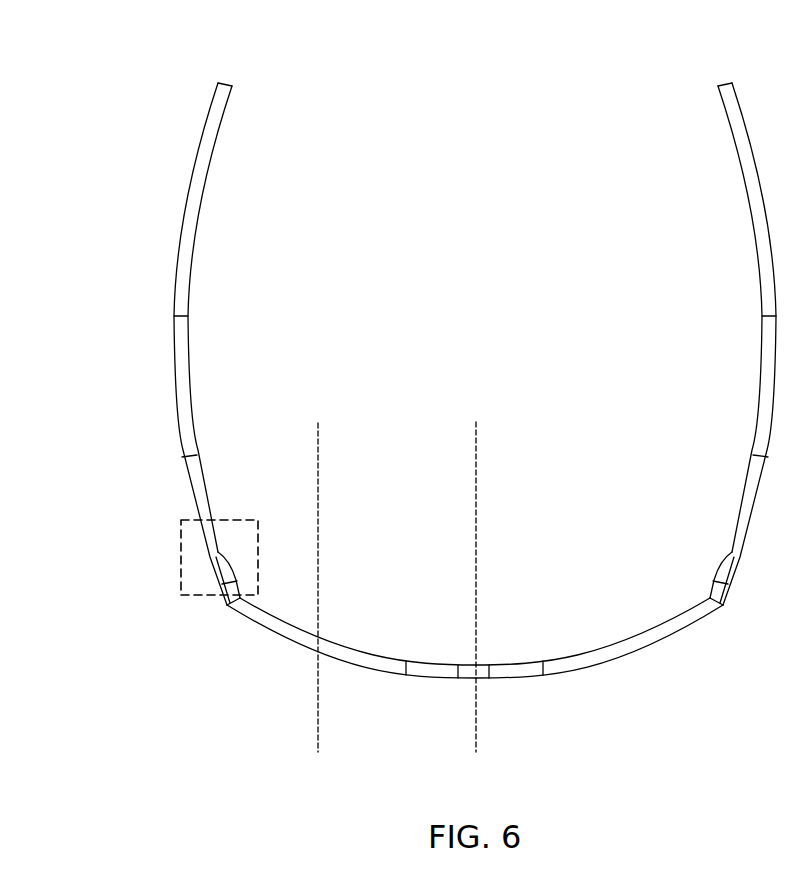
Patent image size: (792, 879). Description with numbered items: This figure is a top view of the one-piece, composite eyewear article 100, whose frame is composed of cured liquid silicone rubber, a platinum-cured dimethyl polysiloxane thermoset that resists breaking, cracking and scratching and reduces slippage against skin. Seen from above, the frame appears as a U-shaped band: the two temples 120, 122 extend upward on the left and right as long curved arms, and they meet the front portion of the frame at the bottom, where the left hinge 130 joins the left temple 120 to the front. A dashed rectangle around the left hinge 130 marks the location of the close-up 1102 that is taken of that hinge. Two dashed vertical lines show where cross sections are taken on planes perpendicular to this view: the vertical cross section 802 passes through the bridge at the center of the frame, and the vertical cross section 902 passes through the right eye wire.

The one-piece, composite eyewear article 100 is at (181, 64).
The temple 120 is at (226, 83).
The temple 122 is at (739, 91).
The left hinge 130 is at (215, 560).
The close-up 1102 is at (233, 520).
The vertical cross section 902 is at (331, 421).
The vertical cross section 802 is at (486, 418).